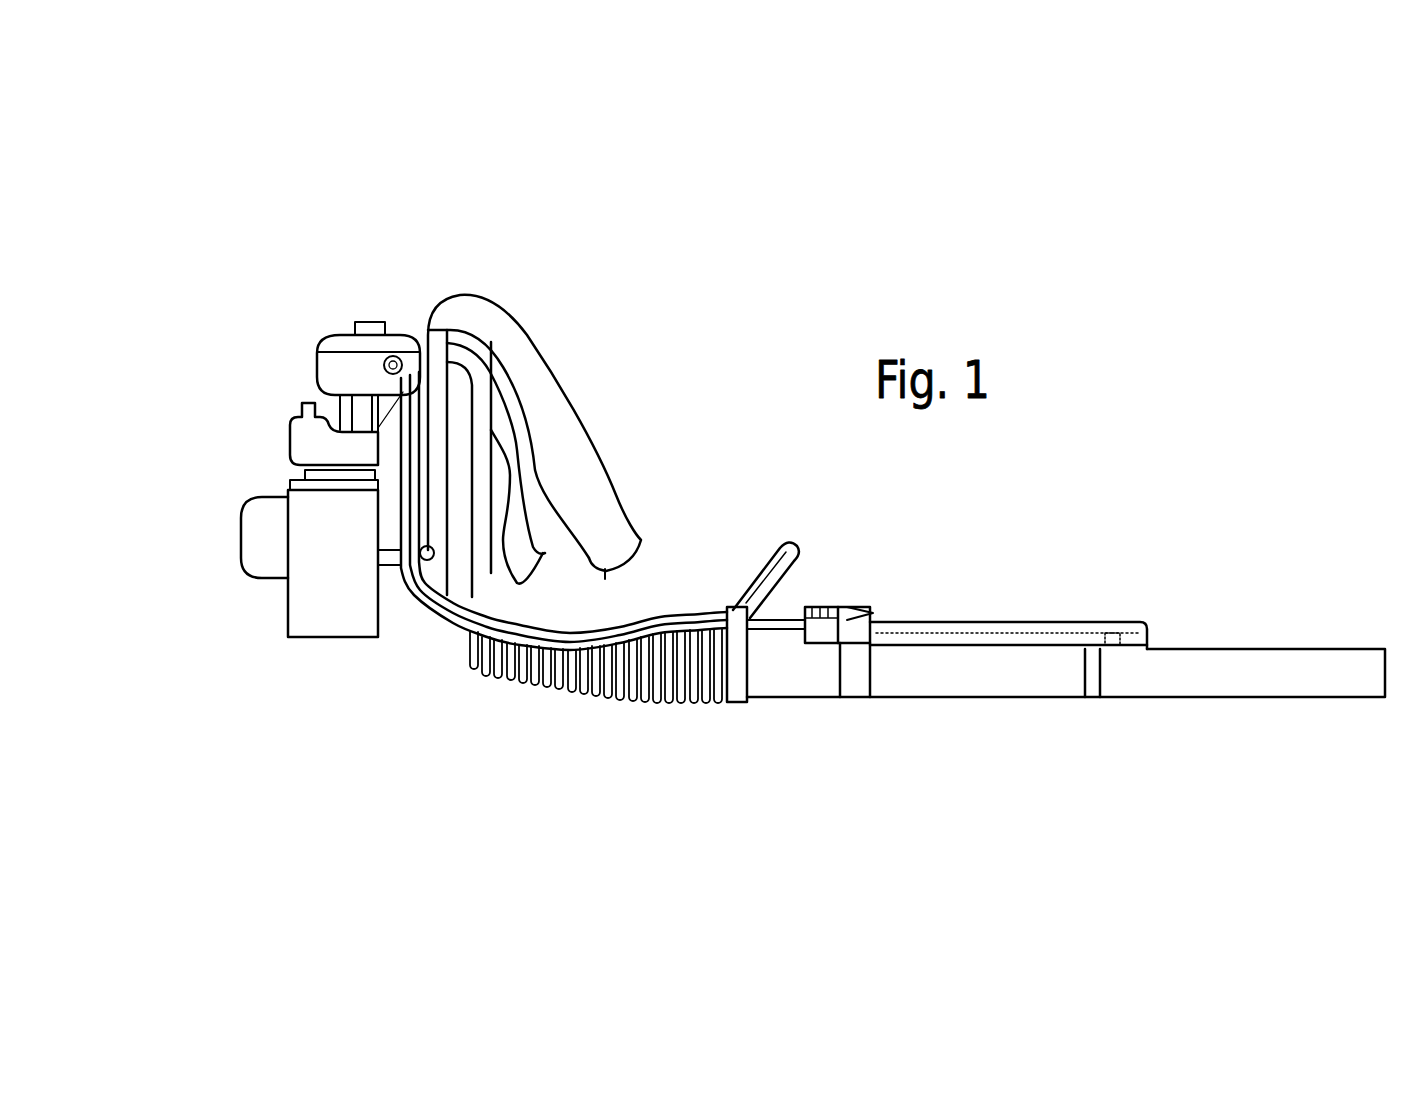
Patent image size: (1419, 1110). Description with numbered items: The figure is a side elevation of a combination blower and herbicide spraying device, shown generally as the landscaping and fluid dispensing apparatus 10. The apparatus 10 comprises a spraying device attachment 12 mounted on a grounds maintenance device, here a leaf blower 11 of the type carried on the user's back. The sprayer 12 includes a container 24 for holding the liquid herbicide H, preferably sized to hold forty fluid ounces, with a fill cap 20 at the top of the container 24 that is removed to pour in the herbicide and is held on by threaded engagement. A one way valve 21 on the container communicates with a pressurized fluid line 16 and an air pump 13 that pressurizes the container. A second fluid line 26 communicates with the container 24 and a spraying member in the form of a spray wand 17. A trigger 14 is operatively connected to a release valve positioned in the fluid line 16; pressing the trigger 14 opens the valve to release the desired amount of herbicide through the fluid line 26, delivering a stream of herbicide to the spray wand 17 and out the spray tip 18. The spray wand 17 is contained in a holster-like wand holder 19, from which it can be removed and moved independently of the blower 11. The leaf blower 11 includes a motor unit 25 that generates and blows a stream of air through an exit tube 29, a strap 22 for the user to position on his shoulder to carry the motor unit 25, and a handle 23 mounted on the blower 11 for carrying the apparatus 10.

The landscaping and fluid dispensing apparatus 10 is at (1131, 124).
The leaf blower 11 is at (783, 700).
The spraying device attachment 12 is at (699, 608).
The air pump 13 is at (817, 606).
The trigger 14 is at (862, 606).
The pressurized fluid line 16 is at (651, 612).
The spray wand 17 is at (978, 645).
The spray tip 18 is at (1120, 648).
The wand holder 19 is at (1134, 623).
The fill cap 20 is at (368, 322).
The one way valve 21 is at (398, 340).
The strap 22 is at (538, 388).
The handle 23 is at (792, 548).
The container 24 is at (341, 345).
The motor unit 25 is at (319, 592).
The second fluid line 26 is at (468, 628).
The exit tube 29 is at (1178, 672).
The liquid herbicide H is at (338, 368).